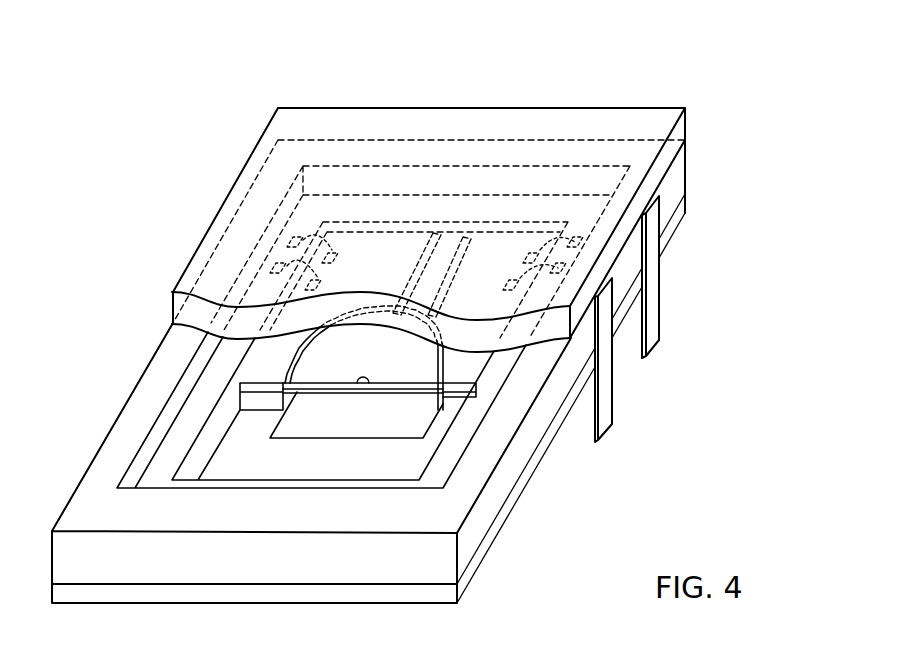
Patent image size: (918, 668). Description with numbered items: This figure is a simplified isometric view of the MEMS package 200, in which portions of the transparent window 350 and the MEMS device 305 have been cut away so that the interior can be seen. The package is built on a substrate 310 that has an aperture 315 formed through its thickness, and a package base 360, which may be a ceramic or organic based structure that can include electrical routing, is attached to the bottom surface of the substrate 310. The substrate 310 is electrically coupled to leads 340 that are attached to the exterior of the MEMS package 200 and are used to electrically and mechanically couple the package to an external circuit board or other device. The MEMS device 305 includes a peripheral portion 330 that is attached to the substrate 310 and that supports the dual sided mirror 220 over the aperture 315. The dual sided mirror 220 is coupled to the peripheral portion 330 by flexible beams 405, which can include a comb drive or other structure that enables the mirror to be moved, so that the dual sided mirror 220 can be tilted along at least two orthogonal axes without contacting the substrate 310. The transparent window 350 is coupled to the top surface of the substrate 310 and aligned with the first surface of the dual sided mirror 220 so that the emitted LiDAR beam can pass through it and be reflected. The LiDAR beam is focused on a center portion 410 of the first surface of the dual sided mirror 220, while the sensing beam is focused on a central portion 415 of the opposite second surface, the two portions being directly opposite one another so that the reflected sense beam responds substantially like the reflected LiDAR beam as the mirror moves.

The MEMS package 200 is at (212, 86).
The flexible beams 405 is at (441, 252).
The MEMS device 305 is at (496, 250).
The transparent window 350 is at (636, 107).
The leads 340 is at (653, 318).
The center portion 410 is at (362, 378).
The peripheral portion 330 is at (262, 402).
The central portion 415 is at (362, 390).
The dual sided mirror 220 is at (398, 372).
The aperture 315 is at (290, 428).
The substrate 310 is at (505, 477).
The package base 360 is at (485, 545).